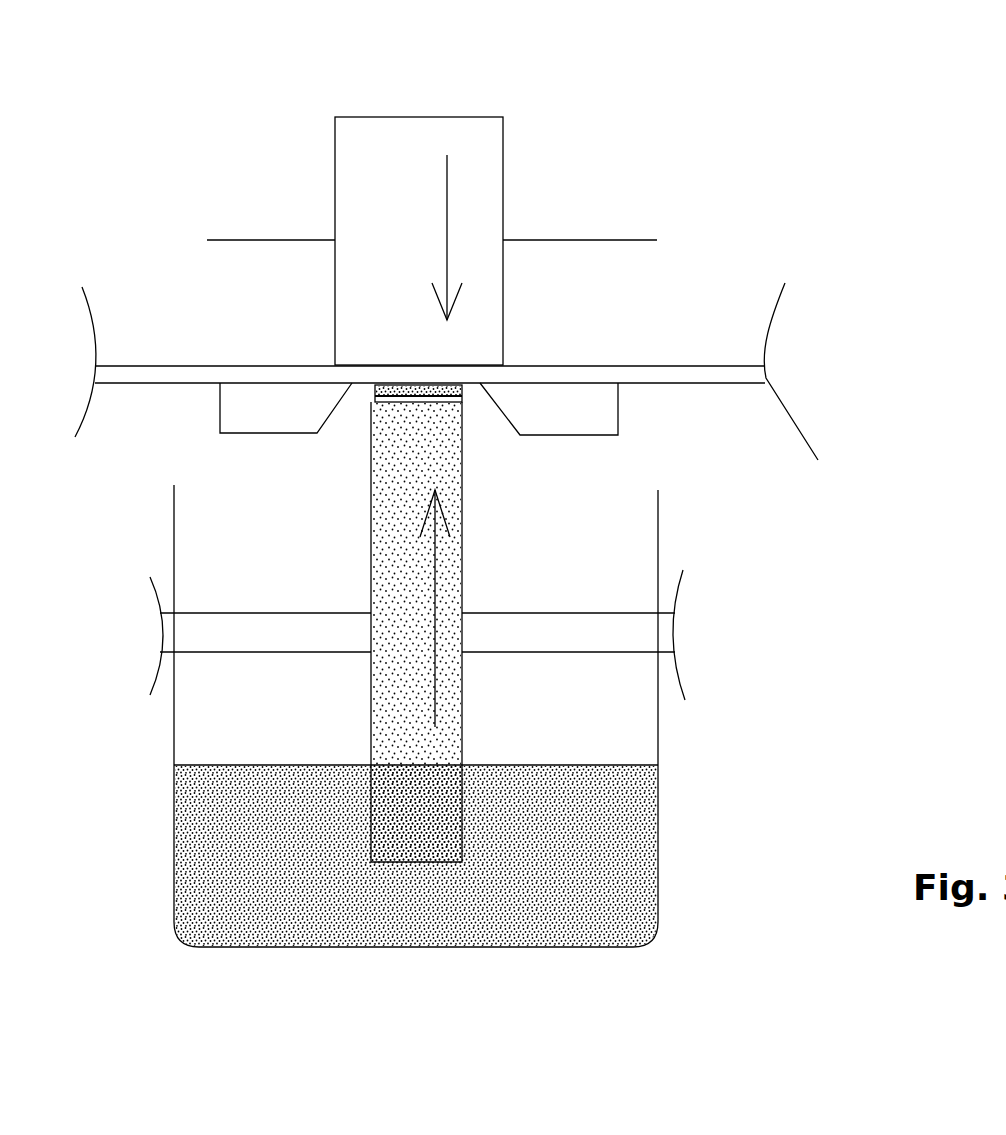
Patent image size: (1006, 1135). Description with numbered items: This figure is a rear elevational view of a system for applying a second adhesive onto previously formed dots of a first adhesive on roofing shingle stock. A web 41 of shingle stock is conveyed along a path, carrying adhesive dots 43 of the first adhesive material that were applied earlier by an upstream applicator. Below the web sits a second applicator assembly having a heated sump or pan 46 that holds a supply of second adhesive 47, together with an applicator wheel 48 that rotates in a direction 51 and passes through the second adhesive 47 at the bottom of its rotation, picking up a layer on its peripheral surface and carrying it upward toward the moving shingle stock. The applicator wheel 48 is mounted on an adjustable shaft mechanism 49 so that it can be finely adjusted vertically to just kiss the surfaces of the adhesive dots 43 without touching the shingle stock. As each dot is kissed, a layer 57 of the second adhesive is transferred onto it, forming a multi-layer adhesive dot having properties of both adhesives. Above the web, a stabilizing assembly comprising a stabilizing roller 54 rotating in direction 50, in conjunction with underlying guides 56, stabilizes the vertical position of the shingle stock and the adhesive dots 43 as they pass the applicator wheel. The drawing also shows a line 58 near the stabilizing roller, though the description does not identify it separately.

The web 41 is at (728, 377).
The adhesive dots 43 is at (388, 386).
The heated sump or pan 46 is at (657, 729).
The second adhesive 47 is at (607, 832).
The applicator wheel 48 is at (450, 567).
The adjustable shaft mechanism 49 is at (583, 625).
The direction 50 is at (447, 225).
The direction 51 is at (433, 623).
The stabilizing roller 54 is at (490, 153).
The guides 56 is at (283, 400).
The layer of second adhesive 57 is at (460, 397).
The support line 58 is at (617, 238).